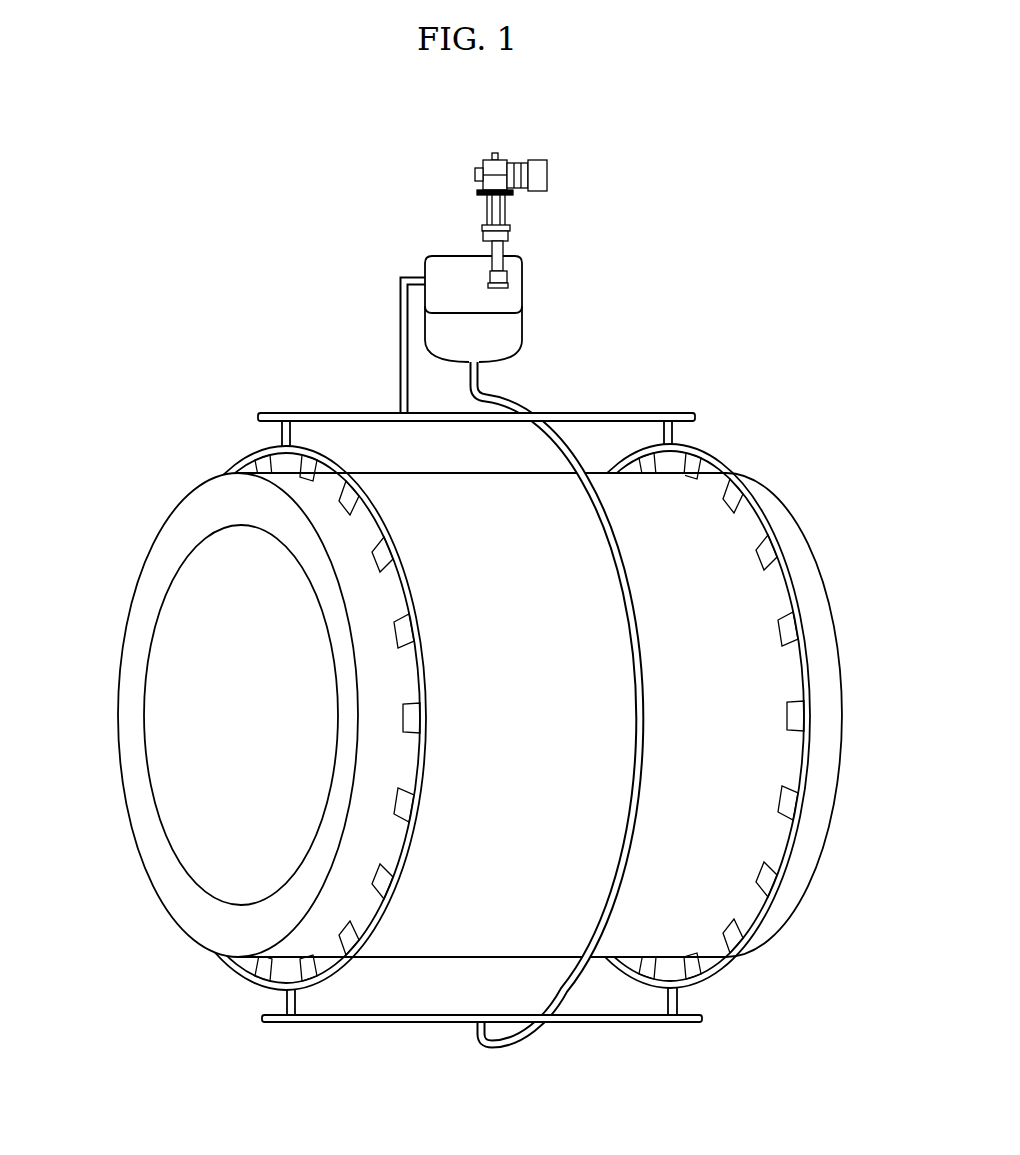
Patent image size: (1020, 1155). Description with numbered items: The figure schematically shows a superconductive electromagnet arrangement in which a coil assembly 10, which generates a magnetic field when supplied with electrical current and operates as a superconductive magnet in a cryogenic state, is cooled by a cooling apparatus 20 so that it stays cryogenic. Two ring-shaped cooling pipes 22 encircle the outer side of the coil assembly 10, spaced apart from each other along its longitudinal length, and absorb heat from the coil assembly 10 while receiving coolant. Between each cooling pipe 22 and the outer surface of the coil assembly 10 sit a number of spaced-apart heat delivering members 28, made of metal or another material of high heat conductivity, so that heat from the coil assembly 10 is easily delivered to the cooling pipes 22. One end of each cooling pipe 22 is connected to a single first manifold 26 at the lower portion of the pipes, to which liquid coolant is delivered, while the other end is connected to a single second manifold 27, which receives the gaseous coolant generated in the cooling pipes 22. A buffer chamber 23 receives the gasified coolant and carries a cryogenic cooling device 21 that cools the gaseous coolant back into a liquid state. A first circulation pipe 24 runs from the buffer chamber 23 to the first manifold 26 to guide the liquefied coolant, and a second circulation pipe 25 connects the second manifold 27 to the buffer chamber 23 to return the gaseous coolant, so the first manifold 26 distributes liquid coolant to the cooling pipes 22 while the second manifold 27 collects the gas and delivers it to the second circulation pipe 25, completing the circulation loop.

The coil assembly 10 is at (140, 550).
The cooling apparatus 20 is at (690, 392).
The cryogenic cooling device 21 is at (506, 212).
The cooling pipes 22 is at (428, 683).
The buffer chamber 23 is at (514, 297).
The first circulation pipe 24 is at (639, 689).
The second circulation pipe 25 is at (400, 291).
The first manifold 26 is at (428, 1025).
The second manifold 27 is at (327, 411).
The heat delivering members 28 is at (407, 613).